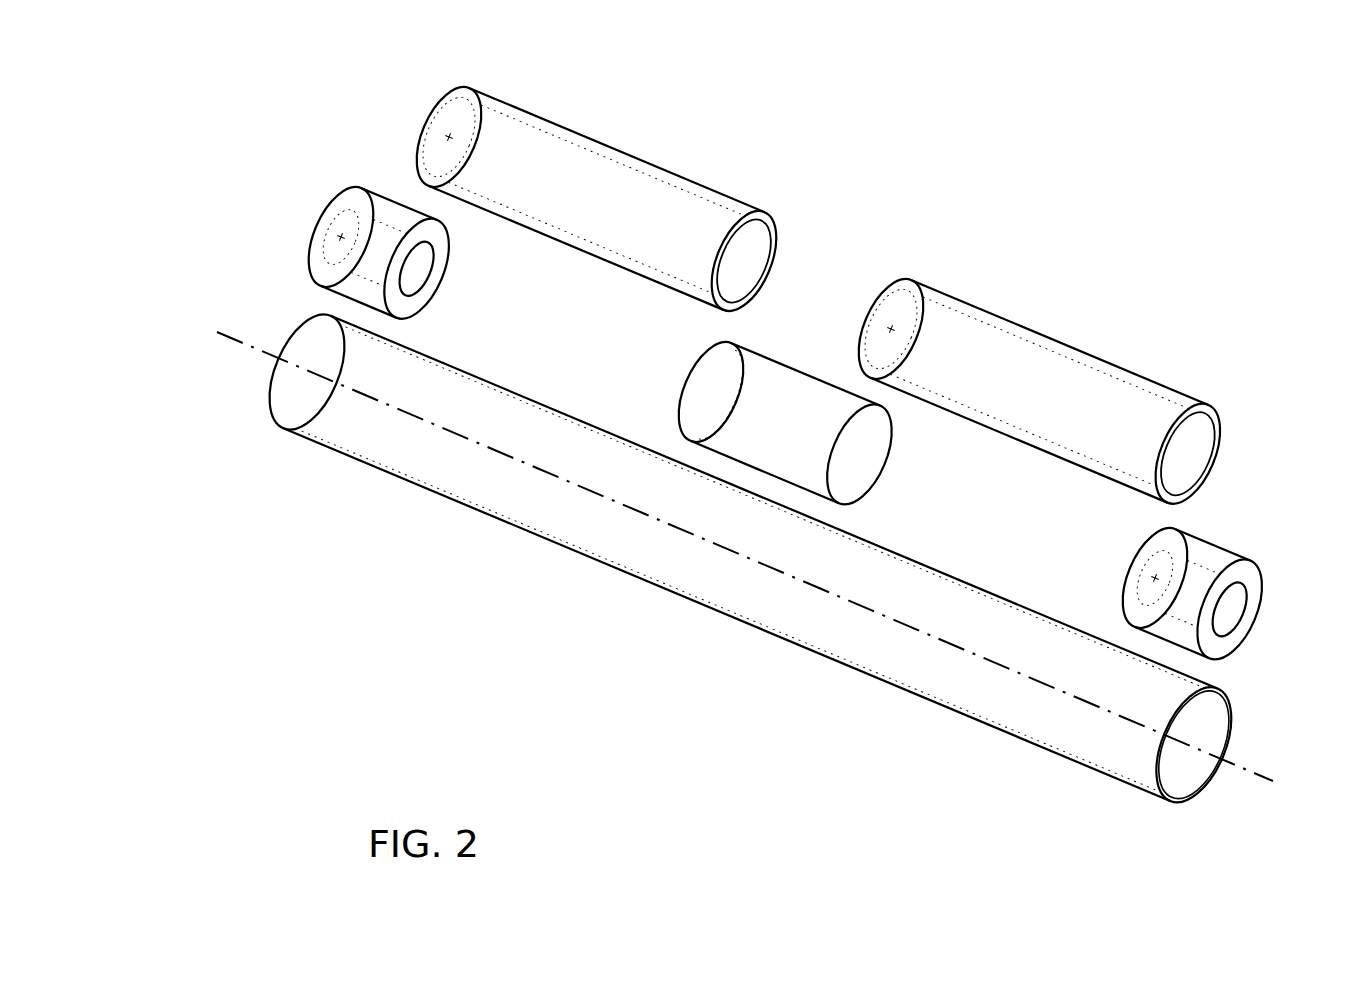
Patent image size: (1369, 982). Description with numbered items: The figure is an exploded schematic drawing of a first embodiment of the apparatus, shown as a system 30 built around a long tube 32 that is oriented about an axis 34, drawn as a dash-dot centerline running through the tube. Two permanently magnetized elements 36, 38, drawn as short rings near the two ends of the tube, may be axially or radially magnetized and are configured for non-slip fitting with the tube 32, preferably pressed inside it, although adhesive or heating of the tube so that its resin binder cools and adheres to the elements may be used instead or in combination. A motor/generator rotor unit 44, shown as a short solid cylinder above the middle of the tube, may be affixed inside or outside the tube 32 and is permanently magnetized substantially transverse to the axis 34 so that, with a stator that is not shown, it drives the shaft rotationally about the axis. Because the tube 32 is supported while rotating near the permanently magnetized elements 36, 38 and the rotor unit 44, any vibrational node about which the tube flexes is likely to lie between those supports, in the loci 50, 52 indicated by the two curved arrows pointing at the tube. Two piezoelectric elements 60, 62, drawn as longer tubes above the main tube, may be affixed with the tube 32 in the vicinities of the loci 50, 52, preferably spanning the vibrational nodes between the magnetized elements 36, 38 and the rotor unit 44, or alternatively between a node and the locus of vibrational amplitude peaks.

The system 30 is at (669, 782).
The tube 32 is at (692, 600).
The axis 34 is at (218, 335).
The permanently magnetized element 36 is at (349, 188).
The permanently magnetized element 38 is at (1238, 558).
The motor/generator rotor unit 44 is at (785, 366).
The locus 50 is at (505, 537).
The locus 52 is at (922, 732).
The piezoelectric element 60 is at (472, 90).
The piezoelectric element 62 is at (910, 282).